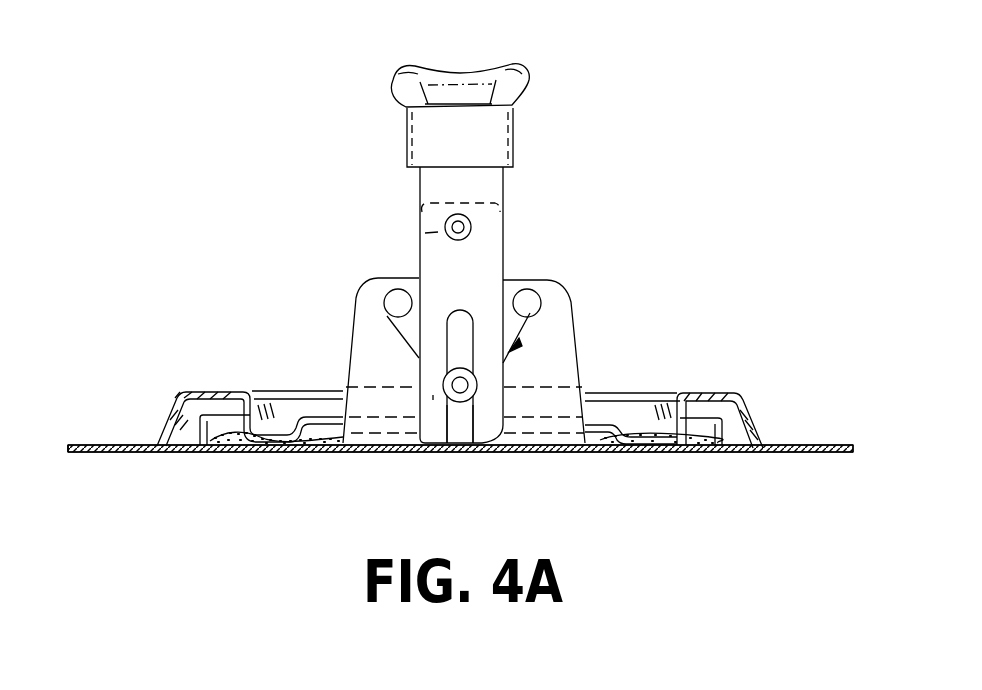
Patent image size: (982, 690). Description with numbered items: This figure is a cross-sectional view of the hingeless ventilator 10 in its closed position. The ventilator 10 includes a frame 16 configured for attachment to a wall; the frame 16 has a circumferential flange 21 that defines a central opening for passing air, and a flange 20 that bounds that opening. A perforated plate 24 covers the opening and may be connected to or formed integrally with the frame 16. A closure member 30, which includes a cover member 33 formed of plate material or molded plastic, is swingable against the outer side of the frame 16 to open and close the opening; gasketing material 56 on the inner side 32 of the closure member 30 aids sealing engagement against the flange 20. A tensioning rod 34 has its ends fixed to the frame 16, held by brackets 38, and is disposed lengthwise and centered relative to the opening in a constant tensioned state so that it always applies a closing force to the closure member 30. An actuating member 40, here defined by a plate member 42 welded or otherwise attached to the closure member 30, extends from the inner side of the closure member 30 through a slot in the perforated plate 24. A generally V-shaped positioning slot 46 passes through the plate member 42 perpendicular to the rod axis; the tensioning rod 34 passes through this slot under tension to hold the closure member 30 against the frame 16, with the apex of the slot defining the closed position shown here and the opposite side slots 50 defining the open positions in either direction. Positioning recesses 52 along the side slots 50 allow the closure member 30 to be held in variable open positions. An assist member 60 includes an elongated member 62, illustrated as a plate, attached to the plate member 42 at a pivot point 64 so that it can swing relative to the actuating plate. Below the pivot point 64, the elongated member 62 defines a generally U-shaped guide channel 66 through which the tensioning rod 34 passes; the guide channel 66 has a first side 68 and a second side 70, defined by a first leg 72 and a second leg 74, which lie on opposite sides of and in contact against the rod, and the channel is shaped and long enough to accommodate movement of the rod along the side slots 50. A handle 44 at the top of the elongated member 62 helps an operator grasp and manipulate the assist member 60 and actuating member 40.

The hingeless ventilator 10 is at (706, 167).
The frame 16 is at (833, 448).
The flange 20 is at (680, 445).
The circumferential flange 21 is at (86, 452).
The perforated plate 24 is at (323, 452).
The closure member 30 is at (607, 482).
The inner side 32 is at (219, 410).
The cover member 33 is at (224, 452).
The tensioning rod 34 is at (474, 415).
The brackets 38 is at (518, 392).
The actuating member 40 is at (643, 242).
The plate member 42 is at (418, 240).
The handle 44 is at (527, 92).
The positioning slot 46 is at (512, 340).
The side slots 50 is at (402, 336).
The positioning recesses 52 is at (402, 318).
The gasketing material 56 is at (680, 443).
The assist member 60 is at (492, 46).
The elongated member 62 is at (435, 186).
The pivot point 64 is at (462, 232).
The guide channel 66 is at (457, 341).
The first side 68 is at (443, 386).
The second side 70 is at (468, 405).
The first leg 72 is at (485, 368).
The second leg 74 is at (434, 392).